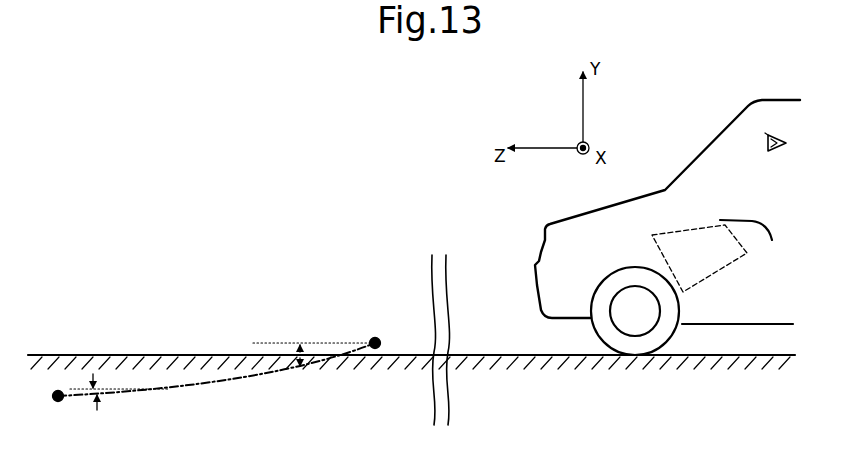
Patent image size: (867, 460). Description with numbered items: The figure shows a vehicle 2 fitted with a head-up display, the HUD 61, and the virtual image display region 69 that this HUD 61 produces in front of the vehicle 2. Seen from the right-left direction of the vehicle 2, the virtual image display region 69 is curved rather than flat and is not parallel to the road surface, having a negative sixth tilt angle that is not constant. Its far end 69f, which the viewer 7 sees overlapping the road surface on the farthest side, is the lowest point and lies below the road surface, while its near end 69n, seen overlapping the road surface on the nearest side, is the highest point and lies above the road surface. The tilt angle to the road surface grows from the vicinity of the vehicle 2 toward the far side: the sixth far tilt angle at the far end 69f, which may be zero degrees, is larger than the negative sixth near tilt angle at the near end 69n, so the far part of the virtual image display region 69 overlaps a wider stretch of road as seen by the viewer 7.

The vehicle 2 is at (534, 277).
The viewer 7 is at (785, 141).
The HUD 61 is at (749, 254).
The virtual image display region 69 is at (194, 381).
The far end 69f is at (60, 391).
The near end 69n is at (380, 339).